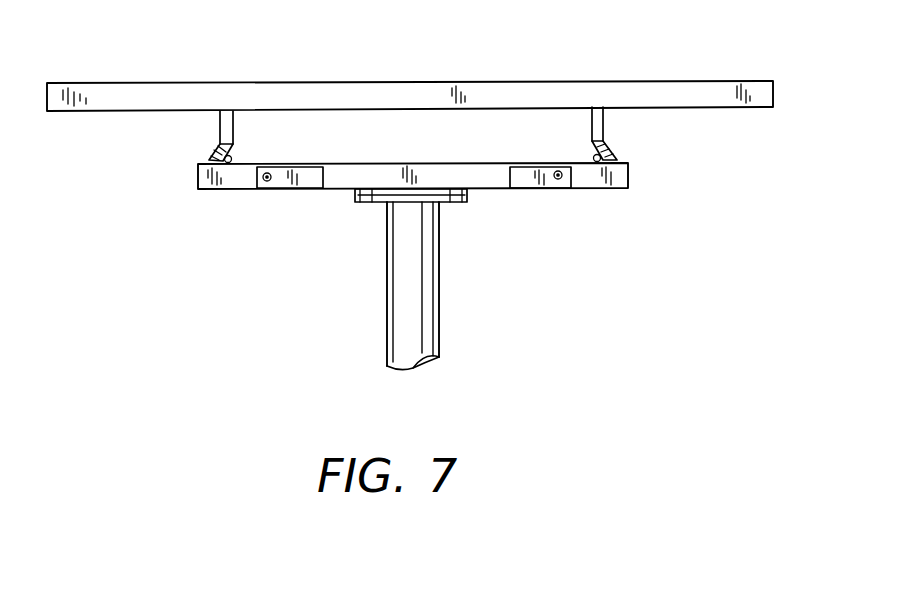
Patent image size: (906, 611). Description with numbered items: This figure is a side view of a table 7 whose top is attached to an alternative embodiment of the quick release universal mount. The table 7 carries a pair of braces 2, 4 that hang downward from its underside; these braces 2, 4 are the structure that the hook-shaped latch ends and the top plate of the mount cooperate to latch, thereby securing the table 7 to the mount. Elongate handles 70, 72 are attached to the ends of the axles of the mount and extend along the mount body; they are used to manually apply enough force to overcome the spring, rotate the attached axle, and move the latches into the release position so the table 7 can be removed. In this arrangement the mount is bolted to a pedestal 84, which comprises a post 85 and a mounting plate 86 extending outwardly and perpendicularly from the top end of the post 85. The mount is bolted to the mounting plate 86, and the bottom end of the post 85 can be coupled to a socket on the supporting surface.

The table 7 is at (560, 78).
The brace 2 is at (565, 163).
The brace 4 is at (259, 163).
The elongate handle 70 is at (533, 188).
The elongate handle 72 is at (305, 178).
The pedestal 84 is at (432, 275).
The post 85 is at (396, 307).
The mounting plate 86 is at (357, 192).